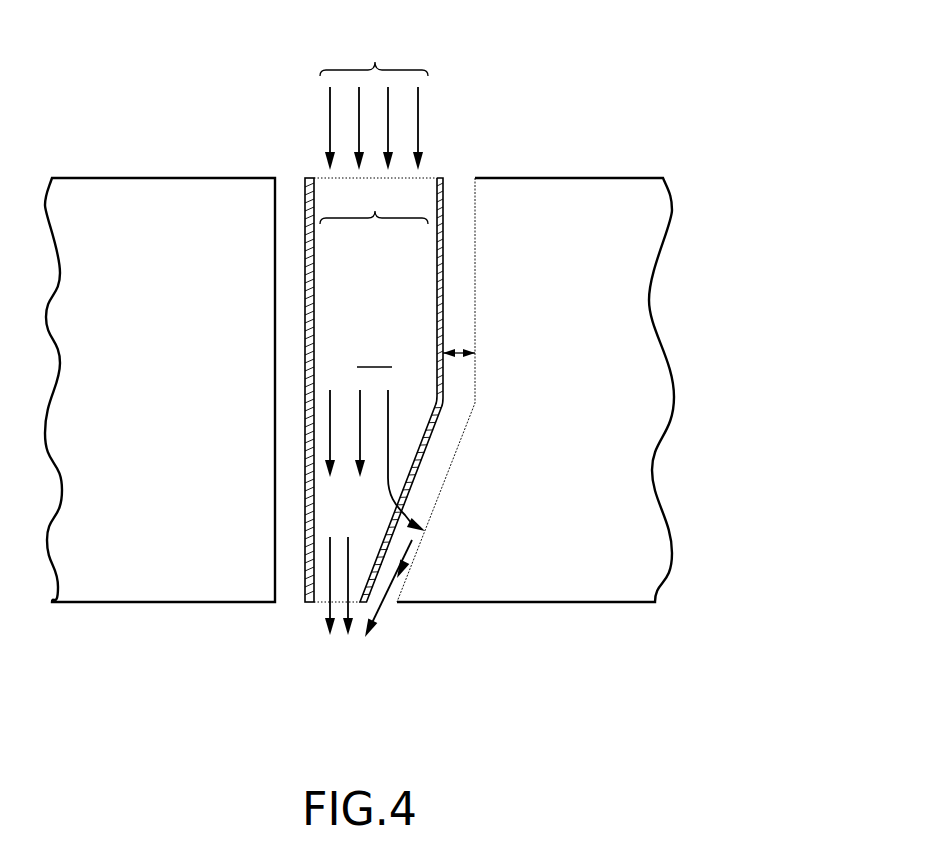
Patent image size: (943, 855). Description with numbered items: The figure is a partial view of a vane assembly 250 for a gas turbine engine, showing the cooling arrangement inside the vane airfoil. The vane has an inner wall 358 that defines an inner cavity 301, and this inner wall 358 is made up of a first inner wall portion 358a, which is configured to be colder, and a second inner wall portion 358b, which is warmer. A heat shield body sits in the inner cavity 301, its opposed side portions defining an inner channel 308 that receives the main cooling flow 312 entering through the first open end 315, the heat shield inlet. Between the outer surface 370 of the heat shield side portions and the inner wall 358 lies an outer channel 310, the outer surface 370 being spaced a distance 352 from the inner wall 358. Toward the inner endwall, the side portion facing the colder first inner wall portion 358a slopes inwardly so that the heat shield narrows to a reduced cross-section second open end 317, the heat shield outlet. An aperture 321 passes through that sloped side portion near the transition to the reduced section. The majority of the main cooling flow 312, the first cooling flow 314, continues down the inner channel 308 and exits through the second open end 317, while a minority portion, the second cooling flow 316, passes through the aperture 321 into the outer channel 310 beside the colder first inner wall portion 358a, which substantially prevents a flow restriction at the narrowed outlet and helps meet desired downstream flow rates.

The vane assembly 250 is at (720, 64).
The inner cavity 301 is at (296, 238).
The inner channel 308 is at (374, 356).
The outer channel 310 is at (458, 400).
The main cooling flow 312 is at (374, 97).
The first cooling flow 314 is at (420, 178).
The first open end 315 is at (375, 213).
The second cooling flow 316 is at (403, 516).
The second open end 317 is at (322, 603).
The aperture 321 is at (420, 476).
The distance 352 is at (465, 346).
The inner wall 358 is at (287, 587).
The first inner wall portion 358a is at (475, 258).
The second inner wall portion 358b is at (277, 207).
The outer surface 370 is at (445, 213).